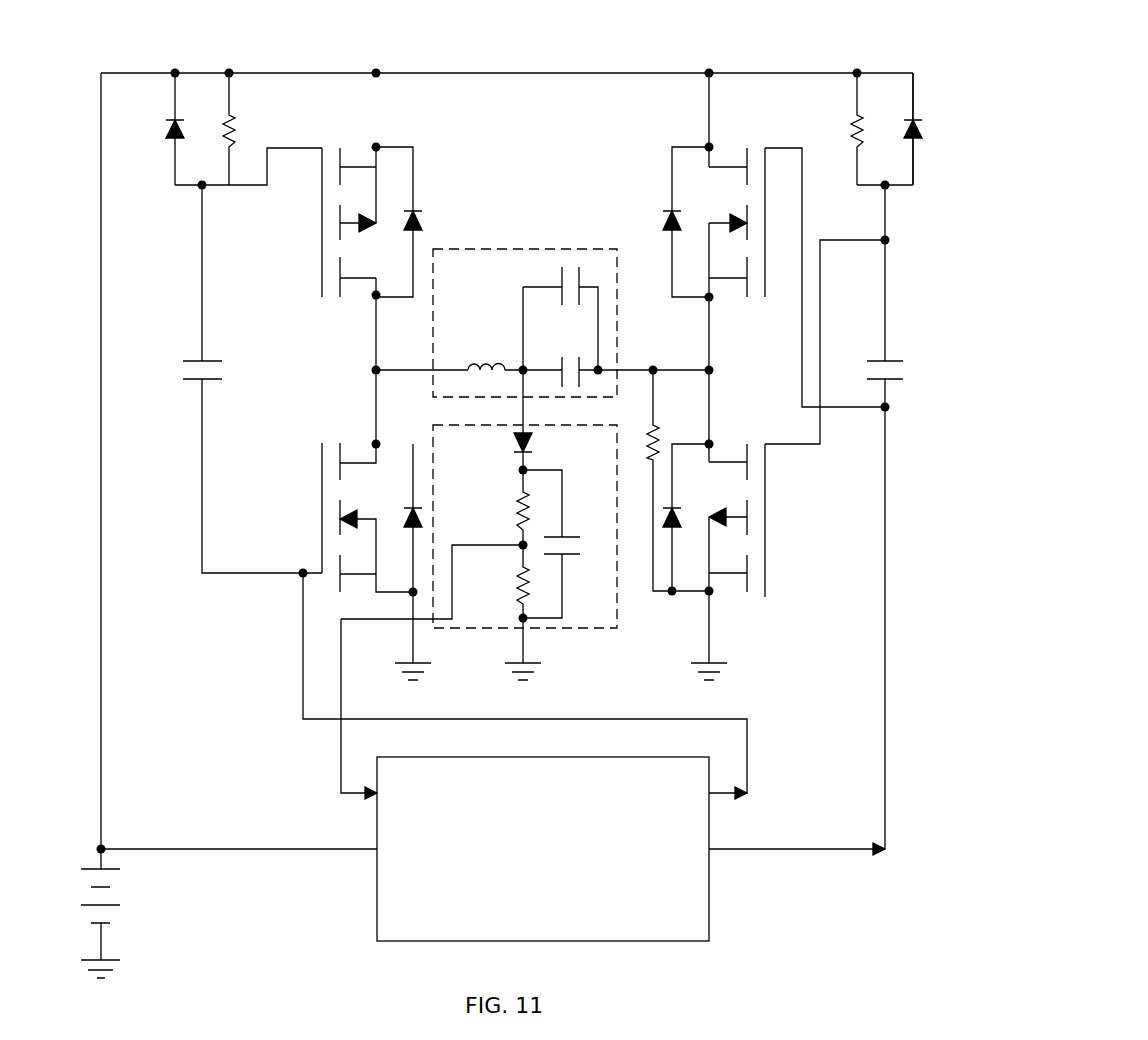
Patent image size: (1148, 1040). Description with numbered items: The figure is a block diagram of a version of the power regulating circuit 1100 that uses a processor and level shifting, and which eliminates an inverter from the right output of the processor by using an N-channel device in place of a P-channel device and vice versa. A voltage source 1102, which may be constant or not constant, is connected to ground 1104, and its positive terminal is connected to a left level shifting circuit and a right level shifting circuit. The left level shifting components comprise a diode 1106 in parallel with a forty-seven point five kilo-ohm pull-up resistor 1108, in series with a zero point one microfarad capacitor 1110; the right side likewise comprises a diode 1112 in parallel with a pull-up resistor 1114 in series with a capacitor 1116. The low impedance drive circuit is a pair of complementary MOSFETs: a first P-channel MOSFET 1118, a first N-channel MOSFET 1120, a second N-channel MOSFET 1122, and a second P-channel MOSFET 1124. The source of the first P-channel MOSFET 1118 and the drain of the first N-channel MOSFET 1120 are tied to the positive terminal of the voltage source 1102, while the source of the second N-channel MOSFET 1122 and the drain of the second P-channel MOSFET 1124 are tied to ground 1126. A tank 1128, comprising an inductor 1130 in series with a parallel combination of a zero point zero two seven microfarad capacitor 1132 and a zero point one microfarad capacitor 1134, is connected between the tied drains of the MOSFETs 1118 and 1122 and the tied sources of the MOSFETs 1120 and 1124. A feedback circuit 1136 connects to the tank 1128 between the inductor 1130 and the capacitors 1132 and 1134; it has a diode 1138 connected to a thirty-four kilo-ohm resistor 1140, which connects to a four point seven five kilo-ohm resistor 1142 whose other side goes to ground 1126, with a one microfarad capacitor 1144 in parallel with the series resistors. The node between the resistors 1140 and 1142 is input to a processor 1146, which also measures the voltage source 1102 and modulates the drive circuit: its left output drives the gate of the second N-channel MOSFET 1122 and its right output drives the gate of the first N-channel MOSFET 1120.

The circuit 1100 is at (875, 52).
The voltage source 1102 is at (120, 905).
The ground 1104 is at (120, 960).
The diode 1106 is at (166, 132).
The pull-up resistor 1108 is at (234, 120).
The capacitor 1110 is at (213, 361).
The diode 1112 is at (922, 134).
The pull-up resistor 1114 is at (852, 120).
The capacitor 1116 is at (891, 361).
The first P-channel MOSFET 1118 is at (432, 214).
The first N-channel MOSFET 1120 is at (653, 214).
The second N-channel MOSFET 1122 is at (301, 488).
The second P-channel MOSFET 1124 is at (785, 492).
The ground 1126 is at (745, 676).
The tank 1128 is at (525, 249).
The inductor 1130 is at (500, 364).
The capacitor 1132 is at (561, 278).
The capacitor 1134 is at (581, 382).
The feedback circuit 1136 is at (612, 629).
The diode 1138 is at (514, 451).
The resistor 1140 is at (517, 494).
The resistor 1142 is at (518, 569).
The capacitor 1144 is at (575, 556).
The processor 1146 is at (377, 924).